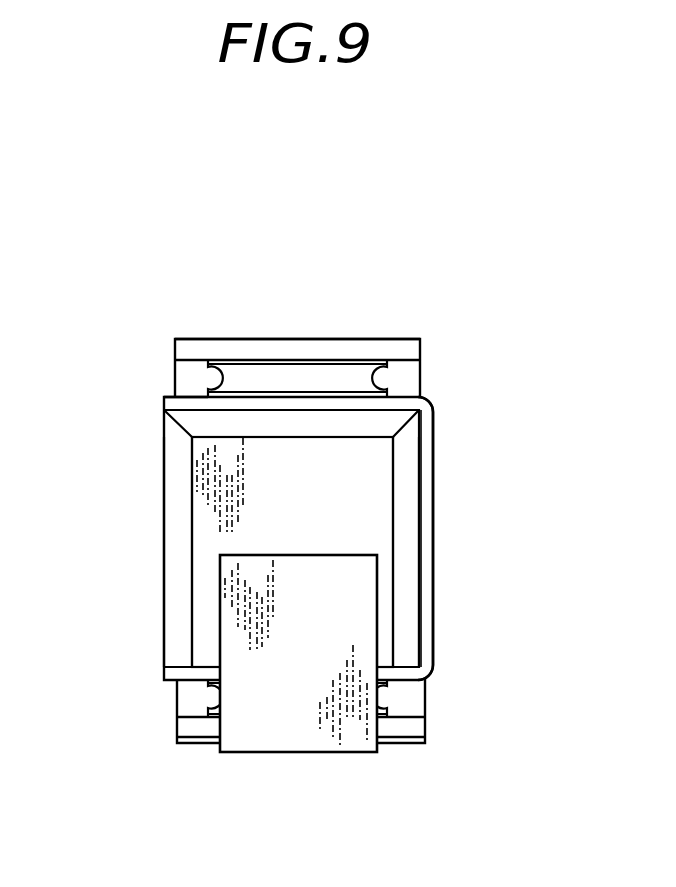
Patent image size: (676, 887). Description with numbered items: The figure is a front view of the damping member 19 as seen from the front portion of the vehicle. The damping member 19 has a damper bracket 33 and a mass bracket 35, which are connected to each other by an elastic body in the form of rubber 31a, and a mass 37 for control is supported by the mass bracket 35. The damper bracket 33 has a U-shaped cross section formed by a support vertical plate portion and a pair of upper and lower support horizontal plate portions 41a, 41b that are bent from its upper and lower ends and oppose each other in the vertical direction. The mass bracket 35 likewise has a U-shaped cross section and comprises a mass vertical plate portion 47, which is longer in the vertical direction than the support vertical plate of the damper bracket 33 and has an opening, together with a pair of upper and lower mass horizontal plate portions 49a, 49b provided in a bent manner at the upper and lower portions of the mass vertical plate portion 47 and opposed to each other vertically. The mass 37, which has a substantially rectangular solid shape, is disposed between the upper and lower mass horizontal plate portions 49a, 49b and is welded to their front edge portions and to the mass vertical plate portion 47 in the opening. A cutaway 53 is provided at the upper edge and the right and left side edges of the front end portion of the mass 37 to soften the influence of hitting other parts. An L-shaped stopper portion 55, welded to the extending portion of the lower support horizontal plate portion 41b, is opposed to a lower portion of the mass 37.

The damping member 19 is at (323, 247).
The rubber 31a is at (300, 373).
The damper bracket 33 is at (408, 332).
The mass bracket 35 is at (440, 531).
The mass 37 is at (205, 518).
The upper support horizontal plate portion 41a is at (235, 347).
The lower support horizontal plate portion 41b is at (397, 745).
The mass vertical plate portion 47 is at (427, 623).
The upper mass horizontal plate portion 49a is at (162, 398).
The lower mass horizontal plate portion 49b is at (172, 672).
The cutaway 53 is at (346, 423).
The stopper portion 55 is at (313, 738).